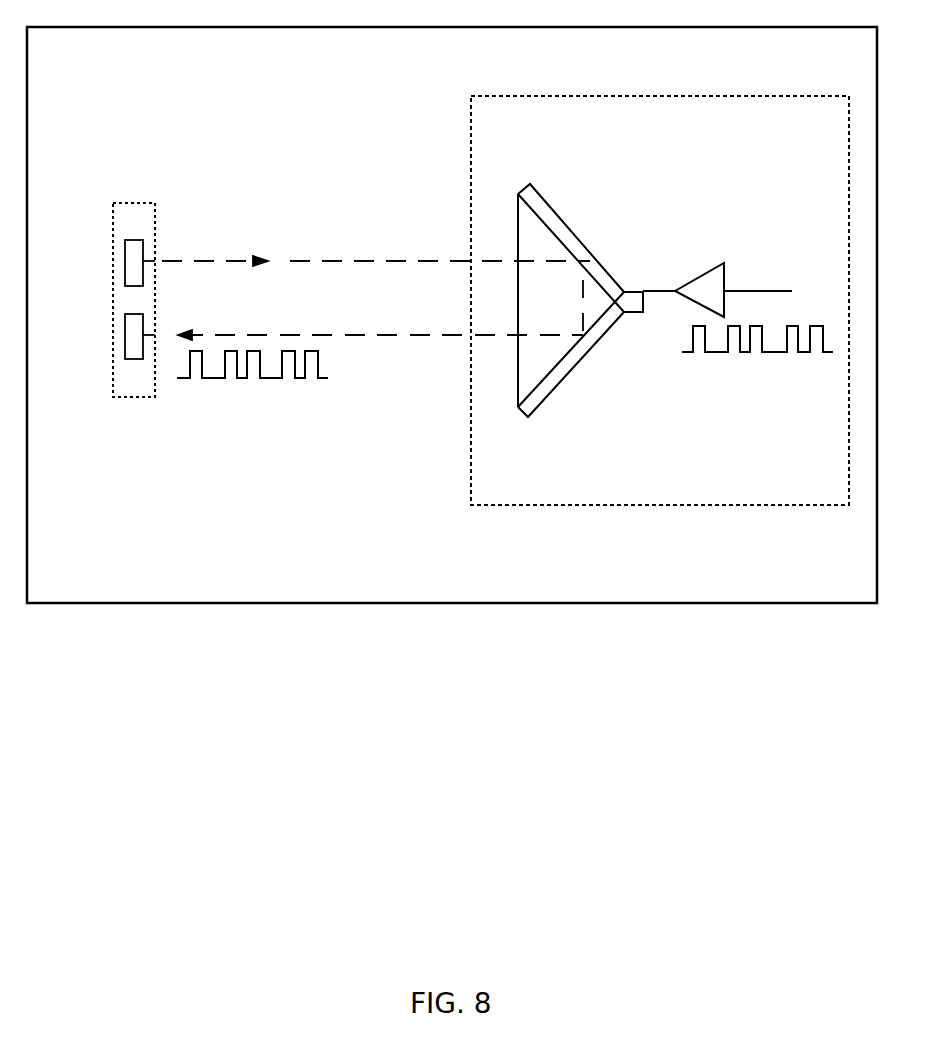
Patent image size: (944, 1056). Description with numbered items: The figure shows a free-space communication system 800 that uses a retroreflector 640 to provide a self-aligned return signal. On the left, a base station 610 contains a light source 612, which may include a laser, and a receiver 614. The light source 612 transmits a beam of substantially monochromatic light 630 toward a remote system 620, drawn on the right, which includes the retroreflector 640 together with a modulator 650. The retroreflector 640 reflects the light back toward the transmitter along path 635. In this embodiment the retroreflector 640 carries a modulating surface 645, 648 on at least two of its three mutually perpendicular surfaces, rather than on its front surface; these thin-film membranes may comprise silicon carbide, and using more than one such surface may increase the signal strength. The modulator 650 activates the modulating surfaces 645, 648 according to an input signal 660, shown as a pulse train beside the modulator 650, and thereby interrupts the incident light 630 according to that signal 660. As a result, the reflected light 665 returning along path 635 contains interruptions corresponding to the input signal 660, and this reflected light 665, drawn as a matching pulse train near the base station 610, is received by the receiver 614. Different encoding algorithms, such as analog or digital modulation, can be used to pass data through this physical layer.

The free-space communication system 800 is at (465, 768).
The base station 610 is at (162, 226).
The light source 612 is at (131, 262).
The receiver 614 is at (131, 338).
The remote system 620 is at (648, 500).
The transmitted light 630 is at (393, 262).
The return path 635 is at (440, 335).
The retroreflector 640 is at (590, 303).
The modulating surface 645 is at (565, 223).
The modulating surface 648 is at (540, 402).
The modulator 650 is at (707, 285).
The input signal 660 is at (717, 352).
The reflected light 665 is at (212, 378).